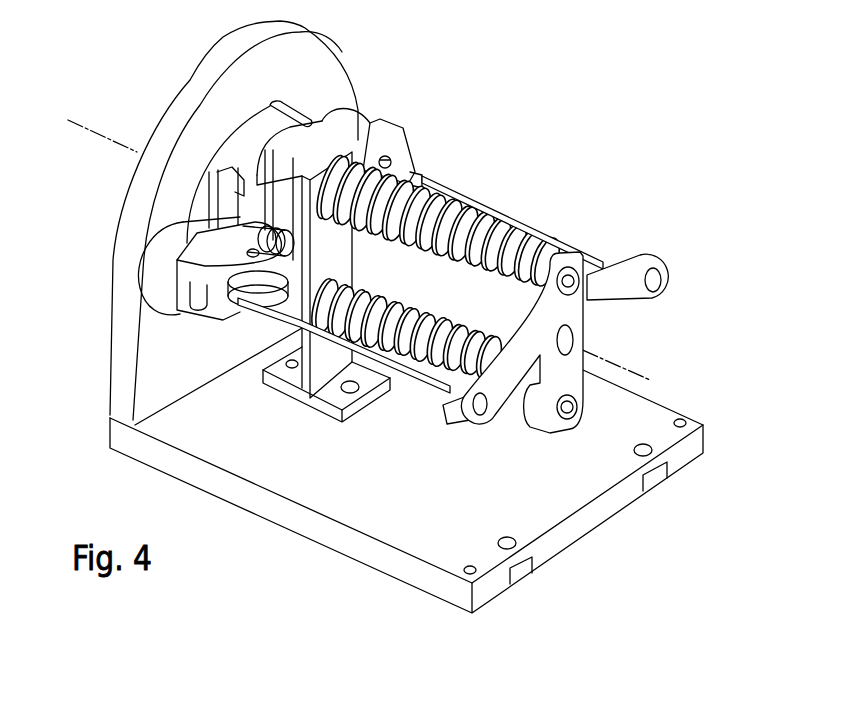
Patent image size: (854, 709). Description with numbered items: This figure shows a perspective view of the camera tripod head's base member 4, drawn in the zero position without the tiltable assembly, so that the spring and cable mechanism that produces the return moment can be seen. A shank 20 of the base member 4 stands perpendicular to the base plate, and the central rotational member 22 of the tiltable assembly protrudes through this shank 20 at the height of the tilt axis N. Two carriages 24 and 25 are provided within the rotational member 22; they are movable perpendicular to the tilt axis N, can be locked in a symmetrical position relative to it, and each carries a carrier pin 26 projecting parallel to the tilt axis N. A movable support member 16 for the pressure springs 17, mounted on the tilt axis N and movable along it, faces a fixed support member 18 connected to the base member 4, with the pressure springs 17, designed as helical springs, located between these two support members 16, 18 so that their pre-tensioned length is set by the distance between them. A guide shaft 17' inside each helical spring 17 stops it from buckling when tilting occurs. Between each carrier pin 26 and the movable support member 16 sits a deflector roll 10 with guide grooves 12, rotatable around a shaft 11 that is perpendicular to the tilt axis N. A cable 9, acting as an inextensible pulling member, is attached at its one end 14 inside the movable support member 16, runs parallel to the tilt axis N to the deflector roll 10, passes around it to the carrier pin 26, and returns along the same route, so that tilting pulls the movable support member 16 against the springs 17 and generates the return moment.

The base member 4 is at (565, 498).
The cable 9 is at (520, 217).
The deflector roll 10 is at (413, 174).
The shaft 11 is at (391, 159).
The guide grooves 12 is at (285, 347).
The end of the cable 14 is at (661, 290).
The movable support member 16 is at (613, 313).
The pressure springs 17 is at (435, 267).
The guide shaft 17' is at (609, 339).
The fixed support member 18 is at (372, 150).
The shank 20 is at (187, 88).
The rotational member 22 is at (266, 109).
The carriage 24 is at (350, 107).
The carriage 25 is at (228, 200).
The carrier pin 26 is at (243, 151).
The tilt axis N is at (80, 128).